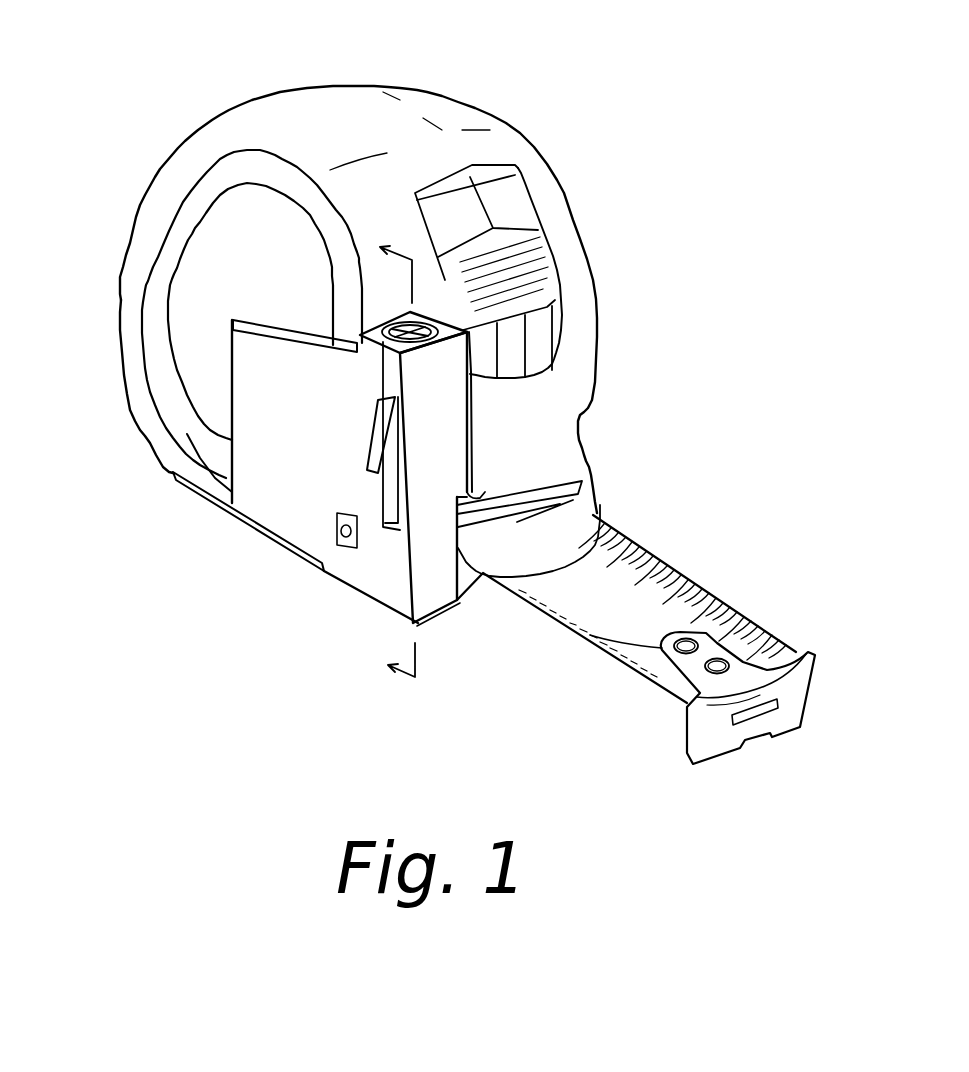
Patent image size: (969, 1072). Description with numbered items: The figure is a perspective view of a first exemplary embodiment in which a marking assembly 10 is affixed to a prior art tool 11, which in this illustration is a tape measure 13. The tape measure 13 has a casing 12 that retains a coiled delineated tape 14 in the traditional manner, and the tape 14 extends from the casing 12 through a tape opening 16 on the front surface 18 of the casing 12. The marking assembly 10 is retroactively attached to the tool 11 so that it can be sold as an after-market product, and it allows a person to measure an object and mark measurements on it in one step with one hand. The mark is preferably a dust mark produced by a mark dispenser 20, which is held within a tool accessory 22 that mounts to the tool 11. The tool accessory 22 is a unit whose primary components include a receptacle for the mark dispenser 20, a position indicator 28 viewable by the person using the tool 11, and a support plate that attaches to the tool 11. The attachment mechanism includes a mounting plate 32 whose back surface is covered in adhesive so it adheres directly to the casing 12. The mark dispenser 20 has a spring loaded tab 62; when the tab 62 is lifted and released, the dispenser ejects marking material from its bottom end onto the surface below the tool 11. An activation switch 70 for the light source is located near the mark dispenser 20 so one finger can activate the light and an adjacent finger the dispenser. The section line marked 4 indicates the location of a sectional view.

The marking assembly 10 is at (218, 445).
The tool 11 is at (580, 130).
The casing 12 is at (225, 102).
The tape measure 13 is at (440, 108).
The tape 14 is at (680, 593).
The tape opening 16 is at (540, 507).
The front surface 18 is at (550, 447).
The mark dispenser 20 is at (393, 382).
The tool accessory 22 is at (373, 570).
The position indicator 28 is at (486, 494).
The mounting plate 32 is at (272, 320).
The spring loaded tab 62 is at (383, 444).
The activation switch 70 is at (340, 535).
The section line 4- 4 is at (396, 439).